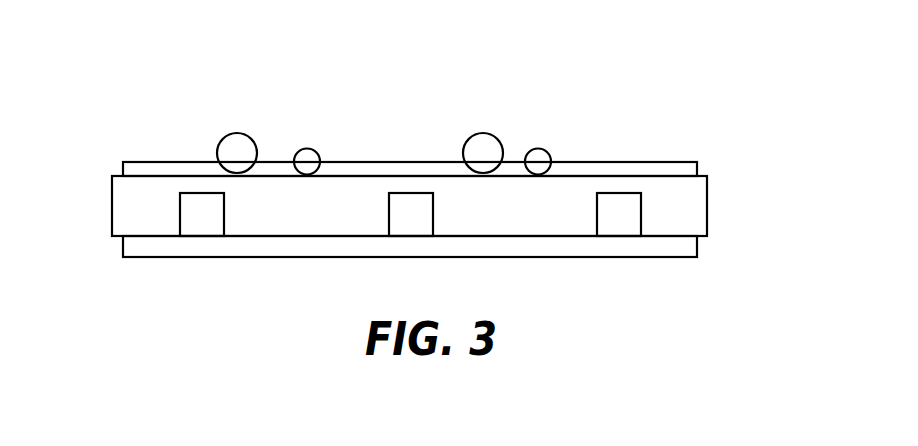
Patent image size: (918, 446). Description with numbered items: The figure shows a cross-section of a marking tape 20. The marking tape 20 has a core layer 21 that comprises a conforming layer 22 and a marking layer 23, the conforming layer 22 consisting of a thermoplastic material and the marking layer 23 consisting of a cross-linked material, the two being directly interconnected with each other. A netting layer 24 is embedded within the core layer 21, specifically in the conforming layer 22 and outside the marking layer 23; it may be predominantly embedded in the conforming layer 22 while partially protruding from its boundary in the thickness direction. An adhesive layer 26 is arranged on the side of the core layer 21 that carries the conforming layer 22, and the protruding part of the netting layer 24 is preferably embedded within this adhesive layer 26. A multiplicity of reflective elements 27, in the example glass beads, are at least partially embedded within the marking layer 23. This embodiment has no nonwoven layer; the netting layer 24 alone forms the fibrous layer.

The marking tape 20 is at (645, 116).
The core layer 21 is at (782, 162).
The conforming layer 22 is at (693, 205).
The marking layer 23 is at (135, 168).
The netting layer 24 is at (199, 227).
The adhesive layer 26 is at (550, 248).
The reflective elements 27 is at (235, 145).